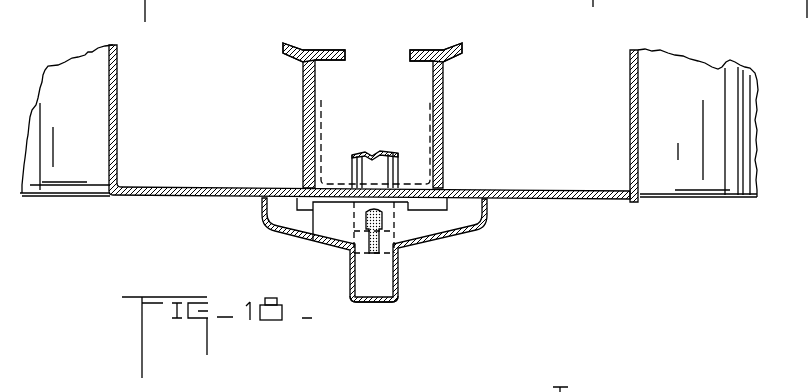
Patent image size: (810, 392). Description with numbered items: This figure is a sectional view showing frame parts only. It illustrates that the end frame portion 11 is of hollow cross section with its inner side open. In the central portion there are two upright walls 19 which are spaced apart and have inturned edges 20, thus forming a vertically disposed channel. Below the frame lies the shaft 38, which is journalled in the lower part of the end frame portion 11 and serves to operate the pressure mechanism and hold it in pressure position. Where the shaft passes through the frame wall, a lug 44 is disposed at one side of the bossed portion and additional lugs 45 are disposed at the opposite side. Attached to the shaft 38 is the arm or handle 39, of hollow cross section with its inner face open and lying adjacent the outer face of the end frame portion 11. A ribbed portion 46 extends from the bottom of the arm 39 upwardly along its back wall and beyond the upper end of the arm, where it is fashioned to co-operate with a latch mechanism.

The end portion 11 is at (568, 202).
The upright walls 19 is at (303, 113).
The inturned edges 20 is at (325, 50).
The shaft 38 is at (378, 165).
The arm or handle 39 is at (283, 235).
The lug 44 is at (305, 210).
The lugs 45 is at (435, 213).
The ribbed portion 46 is at (375, 302).